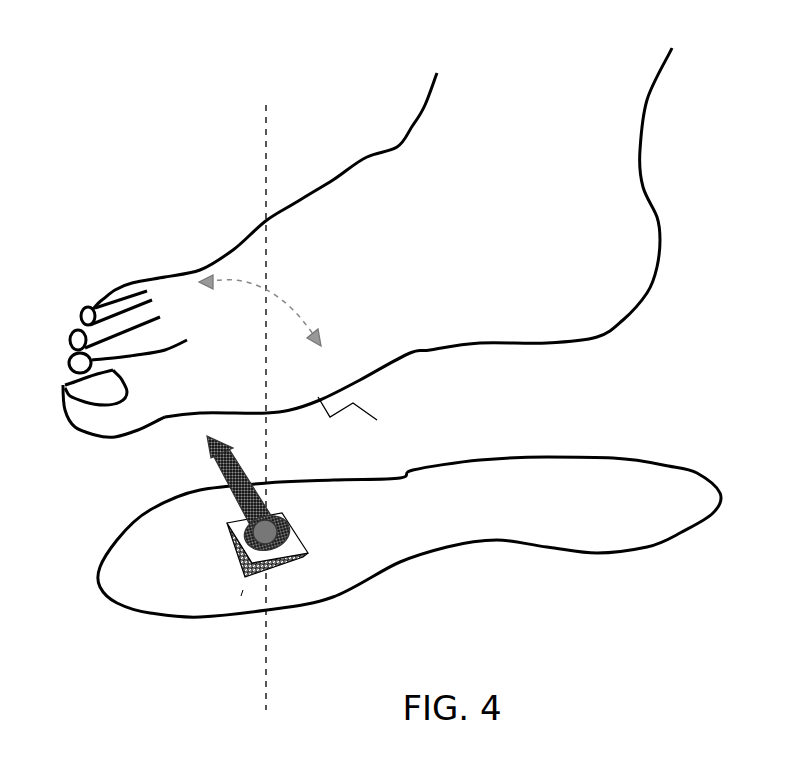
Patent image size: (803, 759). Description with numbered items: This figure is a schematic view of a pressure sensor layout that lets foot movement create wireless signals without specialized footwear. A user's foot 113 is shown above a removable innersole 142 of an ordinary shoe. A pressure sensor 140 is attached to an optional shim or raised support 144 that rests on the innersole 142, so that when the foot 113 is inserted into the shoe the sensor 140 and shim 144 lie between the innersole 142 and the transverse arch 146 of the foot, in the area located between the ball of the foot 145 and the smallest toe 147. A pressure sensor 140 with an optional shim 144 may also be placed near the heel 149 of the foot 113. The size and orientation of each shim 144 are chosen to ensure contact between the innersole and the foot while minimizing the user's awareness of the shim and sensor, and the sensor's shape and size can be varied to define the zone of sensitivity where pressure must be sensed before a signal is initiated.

The foot 113 is at (413, 167).
The pressure sensor 140 is at (268, 527).
The innersole 142 is at (560, 537).
The shim 144 is at (287, 563).
The ball of the foot 145 is at (360, 423).
The transverse arch 146 is at (305, 313).
The smallest toe 147 is at (133, 277).
The heel 149 is at (620, 327).